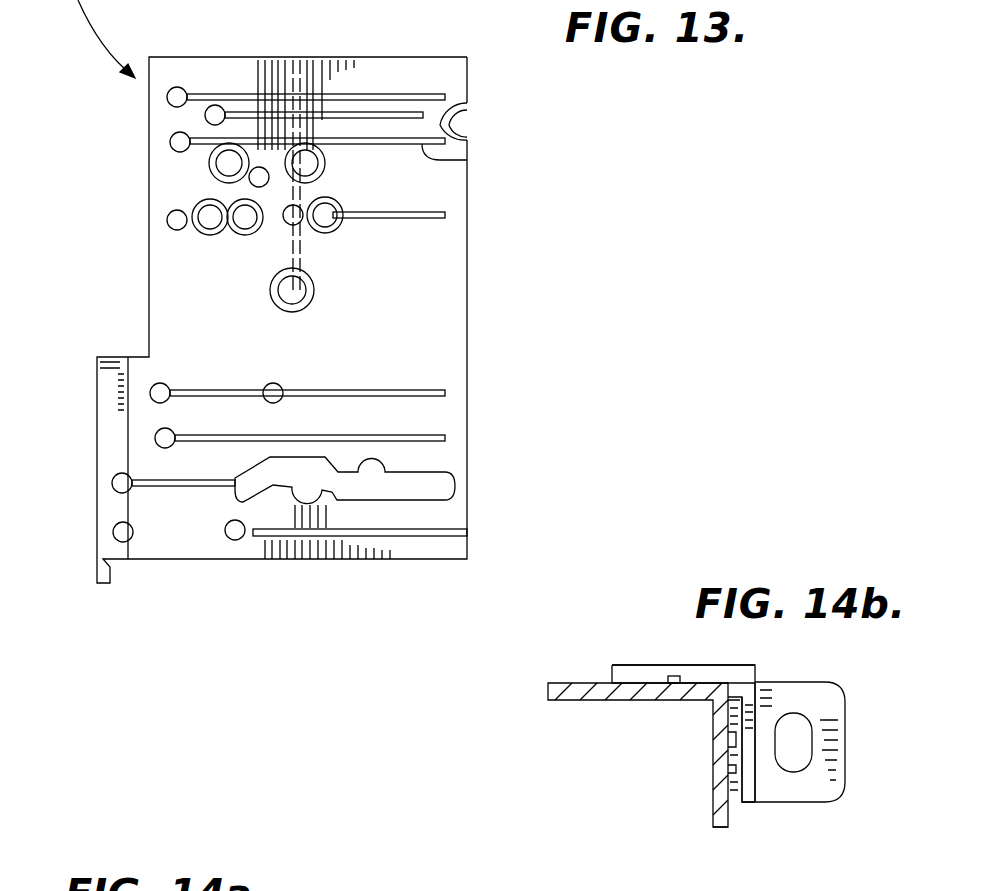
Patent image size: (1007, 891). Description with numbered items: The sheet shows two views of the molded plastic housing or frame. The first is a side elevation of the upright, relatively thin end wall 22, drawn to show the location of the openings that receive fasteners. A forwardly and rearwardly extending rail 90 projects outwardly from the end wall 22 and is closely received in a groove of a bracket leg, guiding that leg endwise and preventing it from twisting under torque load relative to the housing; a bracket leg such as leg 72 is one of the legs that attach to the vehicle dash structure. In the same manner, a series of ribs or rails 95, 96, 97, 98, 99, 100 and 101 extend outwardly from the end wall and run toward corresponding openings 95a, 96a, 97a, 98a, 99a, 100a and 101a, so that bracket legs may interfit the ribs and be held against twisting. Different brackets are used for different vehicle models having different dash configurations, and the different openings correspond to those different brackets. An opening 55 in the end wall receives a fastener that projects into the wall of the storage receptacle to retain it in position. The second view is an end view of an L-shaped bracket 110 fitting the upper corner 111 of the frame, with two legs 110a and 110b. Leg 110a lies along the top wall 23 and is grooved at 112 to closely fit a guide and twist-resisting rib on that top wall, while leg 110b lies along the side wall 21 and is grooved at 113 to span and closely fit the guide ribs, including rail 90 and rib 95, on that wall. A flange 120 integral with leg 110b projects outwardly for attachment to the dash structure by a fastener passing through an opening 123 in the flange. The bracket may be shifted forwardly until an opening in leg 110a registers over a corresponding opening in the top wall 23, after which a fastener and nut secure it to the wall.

In FIG. 13, the end wall 22 is at (440, 270).
In FIG. 13, the bracket leg 72 is at (177, 87).
In FIG. 13, the rail 90 is at (410, 94).
In FIG. 14B, the rail 90 is at (730, 745).
In FIG. 13, the rib 95 is at (425, 94).
In FIG. 14B, the rib 95 is at (727, 758).
In FIG. 13, the opening 95a is at (205, 114).
In FIG. 13, the rib 96 is at (467, 160).
In FIG. 13, the opening 96a is at (170, 142).
In FIG. 13, the rib 97 is at (437, 211).
In FIG. 13, the opening 97a is at (167, 220).
In FIG. 13, the rib 98 is at (447, 388).
In FIG. 13, the opening 98a is at (268, 385).
In FIG. 13, the rib 99 is at (447, 433).
In FIG. 13, the opening 99a is at (157, 436).
In FIG. 13, the rib 100 is at (157, 478).
In FIG. 13, the opening 100a is at (120, 490).
In FIG. 13, the rib 101 is at (440, 537).
In FIG. 13, the opening 101a is at (232, 541).
In FIG. 13, the opening 55 is at (345, 483).
In FIG. 14B, the top wall 23 is at (565, 682).
In FIG. 14B, the L-shaped bracket 110 is at (647, 650).
In FIG. 14B, the leg 110a is at (712, 664).
In FIG. 14B, the leg 110b is at (753, 778).
In FIG. 14B, the upper corner 111 is at (740, 681).
In FIG. 14B, the groove 112 is at (672, 684).
In FIG. 14B, the groove 113 is at (725, 758).
In FIG. 14B, the flange 120 is at (835, 714).
In FIG. 14B, the opening 123 is at (800, 733).
In FIG. 14B, the end wall 21 is at (728, 815).